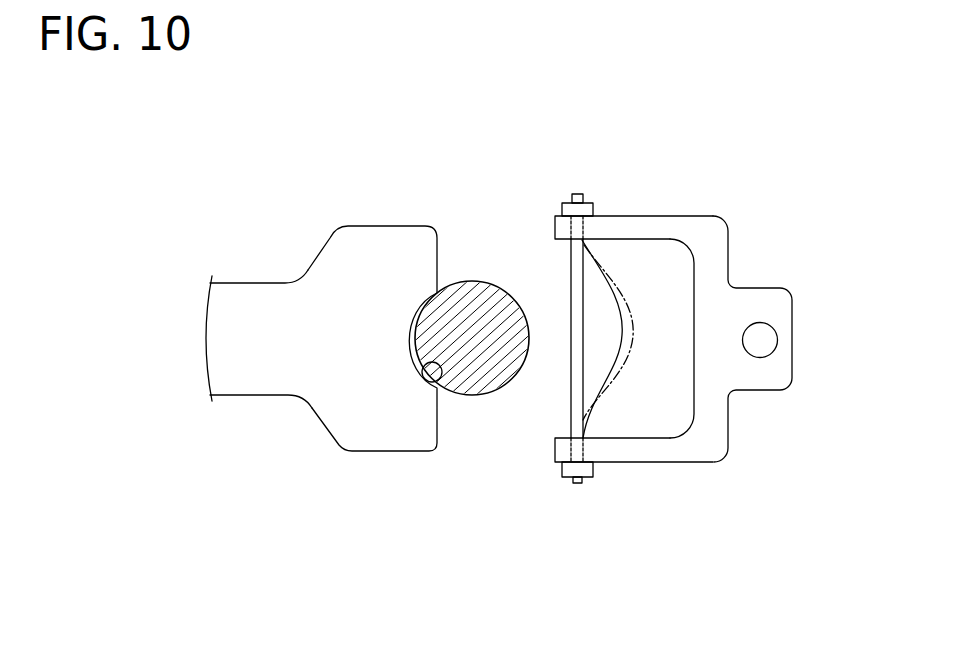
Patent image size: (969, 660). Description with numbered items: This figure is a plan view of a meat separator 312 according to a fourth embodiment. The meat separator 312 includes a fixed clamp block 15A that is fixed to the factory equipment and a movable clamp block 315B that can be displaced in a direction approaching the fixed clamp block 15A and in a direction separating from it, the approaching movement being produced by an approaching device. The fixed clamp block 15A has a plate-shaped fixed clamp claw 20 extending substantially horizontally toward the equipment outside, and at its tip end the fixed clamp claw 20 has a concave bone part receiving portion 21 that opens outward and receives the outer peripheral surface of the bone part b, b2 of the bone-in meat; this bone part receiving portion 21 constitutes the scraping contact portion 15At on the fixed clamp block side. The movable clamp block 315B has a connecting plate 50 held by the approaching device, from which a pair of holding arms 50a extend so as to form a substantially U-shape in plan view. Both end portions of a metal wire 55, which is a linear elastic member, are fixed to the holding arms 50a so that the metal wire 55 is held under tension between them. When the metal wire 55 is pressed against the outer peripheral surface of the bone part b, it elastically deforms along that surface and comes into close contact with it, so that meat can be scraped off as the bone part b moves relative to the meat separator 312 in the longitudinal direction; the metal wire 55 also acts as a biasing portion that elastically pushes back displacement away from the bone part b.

The fixed clamp block 15A is at (320, 372).
The fixed clamp claw 20 is at (350, 427).
The bone part receiving portion 21 is at (437, 376).
The scraping contact portion 15At is at (372, 488).
The bone part b2 is at (486, 398).
The bone part b is at (472, 433).
The meat separator 312 is at (688, 321).
The movable clamp block 315B is at (732, 237).
The holding arms 50a is at (640, 215).
The connecting plate 50 is at (711, 356).
The metal wire 55 is at (622, 358).